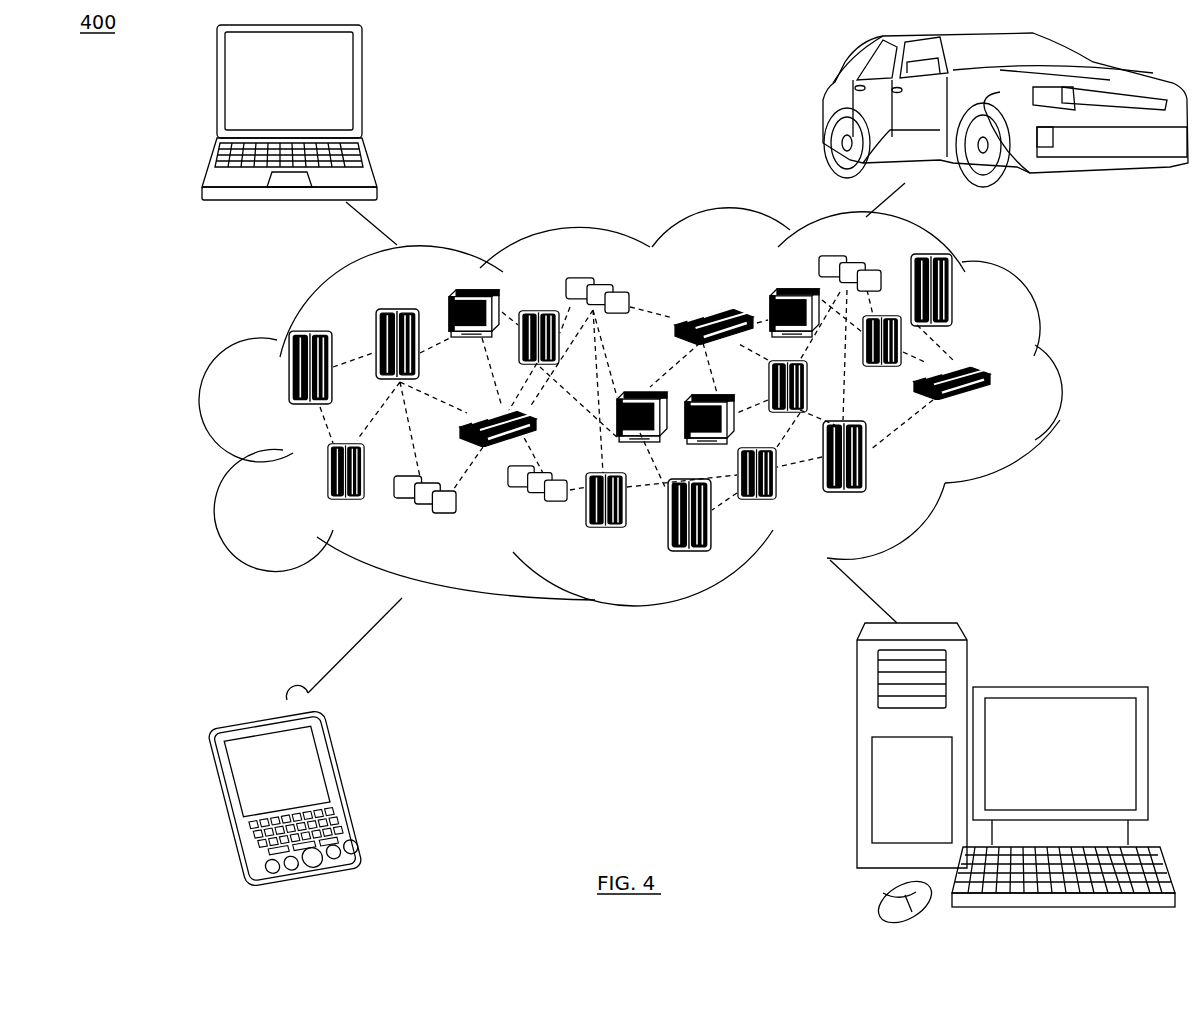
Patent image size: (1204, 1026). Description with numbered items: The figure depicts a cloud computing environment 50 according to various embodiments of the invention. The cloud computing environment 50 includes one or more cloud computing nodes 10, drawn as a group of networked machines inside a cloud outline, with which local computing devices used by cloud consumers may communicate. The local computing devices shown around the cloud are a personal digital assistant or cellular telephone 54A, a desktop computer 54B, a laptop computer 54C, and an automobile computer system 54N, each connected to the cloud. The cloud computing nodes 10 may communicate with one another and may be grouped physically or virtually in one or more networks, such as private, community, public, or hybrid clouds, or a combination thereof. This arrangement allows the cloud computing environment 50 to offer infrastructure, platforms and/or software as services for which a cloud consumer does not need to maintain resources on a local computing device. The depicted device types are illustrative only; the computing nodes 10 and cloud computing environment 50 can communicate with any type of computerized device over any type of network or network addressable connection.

The cloud computing environment 50 is at (1060, 382).
The cloud computing node 10 is at (1003, 413).
The personal digital assistant or cellular telephone 54A is at (428, 787).
The desktop computer 54B is at (1093, 661).
The laptop computer 54C is at (437, 87).
The automobile computer system 54N is at (825, 106).